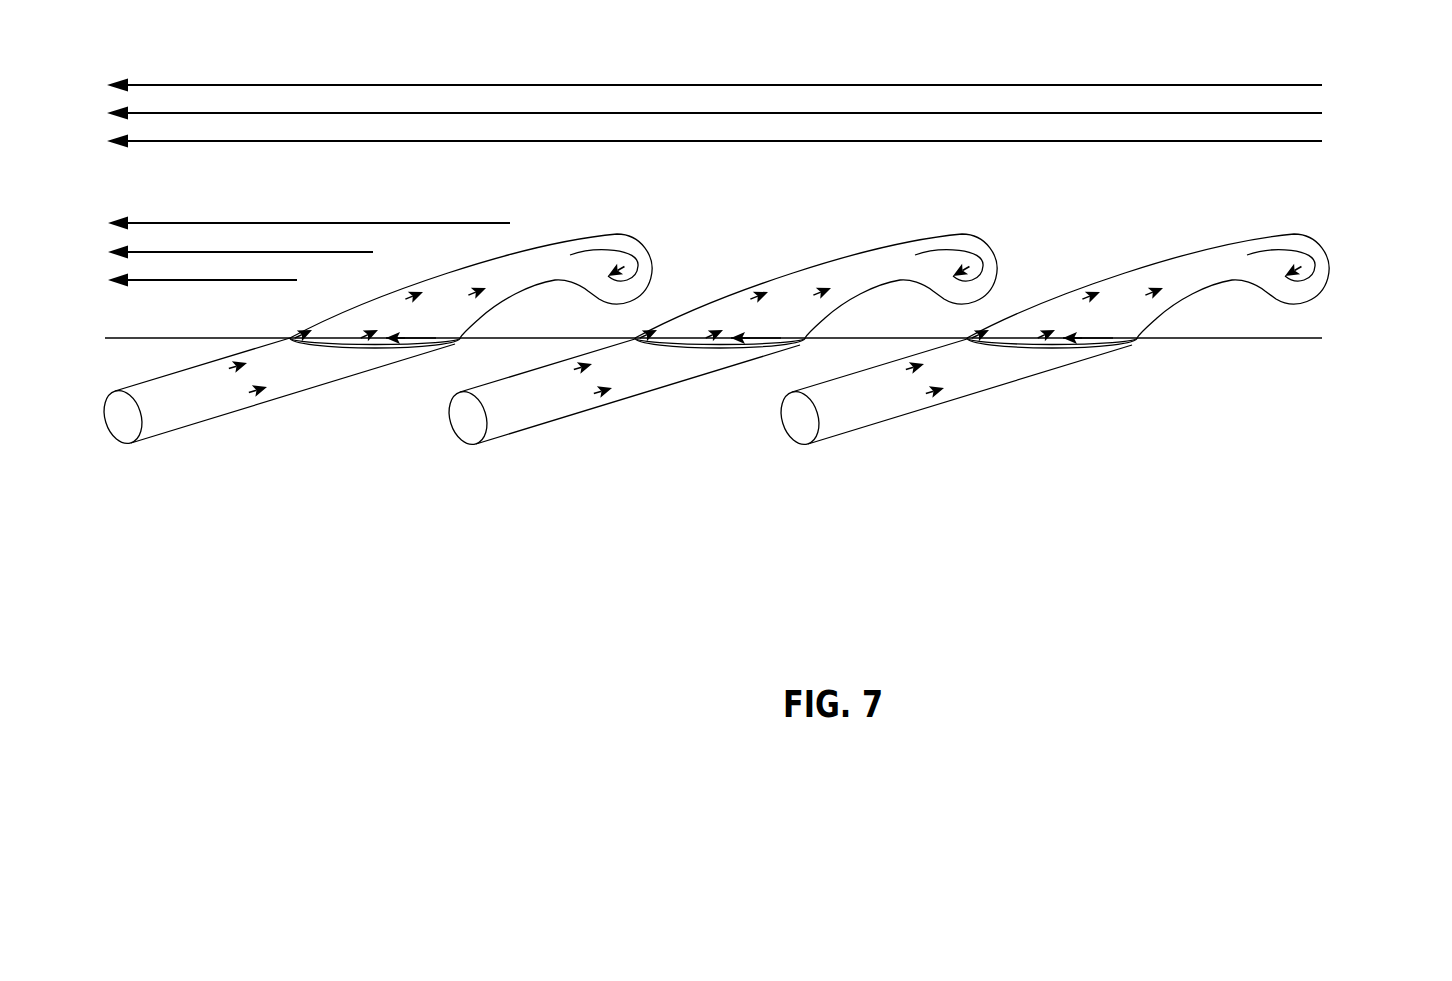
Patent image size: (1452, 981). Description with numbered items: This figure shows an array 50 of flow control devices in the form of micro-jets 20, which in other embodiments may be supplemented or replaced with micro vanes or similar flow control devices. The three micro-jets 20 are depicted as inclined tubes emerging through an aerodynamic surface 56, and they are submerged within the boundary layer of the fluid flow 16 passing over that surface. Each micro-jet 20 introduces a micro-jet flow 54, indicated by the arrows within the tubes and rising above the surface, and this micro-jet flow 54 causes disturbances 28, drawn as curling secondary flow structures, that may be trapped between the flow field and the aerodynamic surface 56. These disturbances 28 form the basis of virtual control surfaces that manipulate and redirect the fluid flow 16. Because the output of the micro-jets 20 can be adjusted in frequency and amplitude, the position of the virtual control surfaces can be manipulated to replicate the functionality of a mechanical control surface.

The fluid flow 16 is at (714, 94).
The micro-jet 20 is at (615, 414).
The disturbances 28 is at (866, 258).
The array 50 is at (615, 443).
The micro-jet flow 54 is at (950, 398).
The aerodynamic surface 56 is at (713, 318).